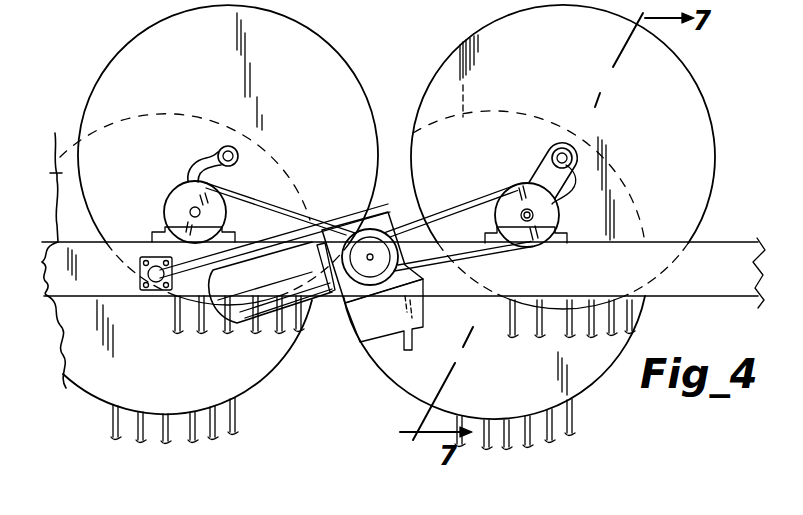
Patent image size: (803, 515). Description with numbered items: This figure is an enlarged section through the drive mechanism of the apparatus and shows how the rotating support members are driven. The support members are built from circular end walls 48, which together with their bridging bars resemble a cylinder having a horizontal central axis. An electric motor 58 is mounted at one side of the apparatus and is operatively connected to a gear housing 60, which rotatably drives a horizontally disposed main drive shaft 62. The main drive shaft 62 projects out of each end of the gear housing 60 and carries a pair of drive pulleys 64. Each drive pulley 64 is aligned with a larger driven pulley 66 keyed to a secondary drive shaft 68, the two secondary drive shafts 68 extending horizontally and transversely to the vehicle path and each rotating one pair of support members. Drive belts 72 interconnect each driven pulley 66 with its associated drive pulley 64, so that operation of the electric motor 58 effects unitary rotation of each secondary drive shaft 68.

The circular end wall 48 is at (132, 40).
The electric motor 58 is at (246, 290).
The gear housing 60 is at (350, 303).
The main drive shaft 62 is at (372, 262).
The drive pulley 64 is at (363, 244).
The driven pulley 66 is at (177, 198).
The secondary drive shaft 68 is at (190, 208).
The drive belt 72 is at (256, 193).